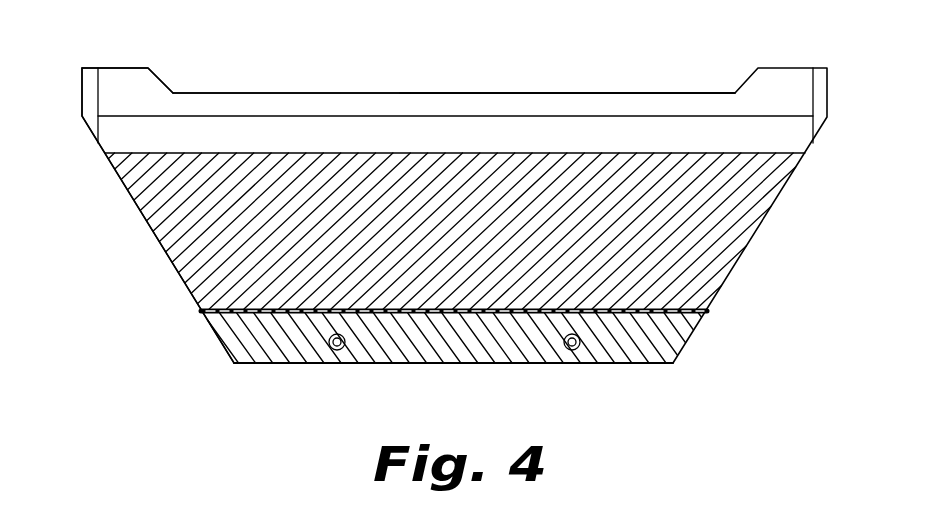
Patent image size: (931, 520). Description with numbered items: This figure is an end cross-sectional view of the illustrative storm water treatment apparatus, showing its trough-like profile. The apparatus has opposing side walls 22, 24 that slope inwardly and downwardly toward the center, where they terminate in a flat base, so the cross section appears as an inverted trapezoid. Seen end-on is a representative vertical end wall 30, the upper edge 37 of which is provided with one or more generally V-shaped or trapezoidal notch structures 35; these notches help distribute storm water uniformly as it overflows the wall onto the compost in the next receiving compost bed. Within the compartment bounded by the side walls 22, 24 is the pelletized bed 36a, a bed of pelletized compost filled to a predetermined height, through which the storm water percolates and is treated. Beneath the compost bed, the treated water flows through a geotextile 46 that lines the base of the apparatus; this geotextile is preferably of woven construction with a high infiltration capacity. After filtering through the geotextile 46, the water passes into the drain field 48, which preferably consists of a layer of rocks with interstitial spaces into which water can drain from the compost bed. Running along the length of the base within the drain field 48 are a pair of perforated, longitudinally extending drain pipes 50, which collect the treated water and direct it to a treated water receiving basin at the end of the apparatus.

The side wall 22 is at (765, 218).
The side wall 24 is at (116, 170).
The end wall 30 is at (115, 82).
The notch structure 35 is at (575, 87).
The pelletized bed 36a is at (193, 242).
The upper edge 37 is at (443, 94).
The geotextile 46 is at (710, 308).
The drain field 48 is at (230, 337).
The drain pipe 50 is at (339, 350).